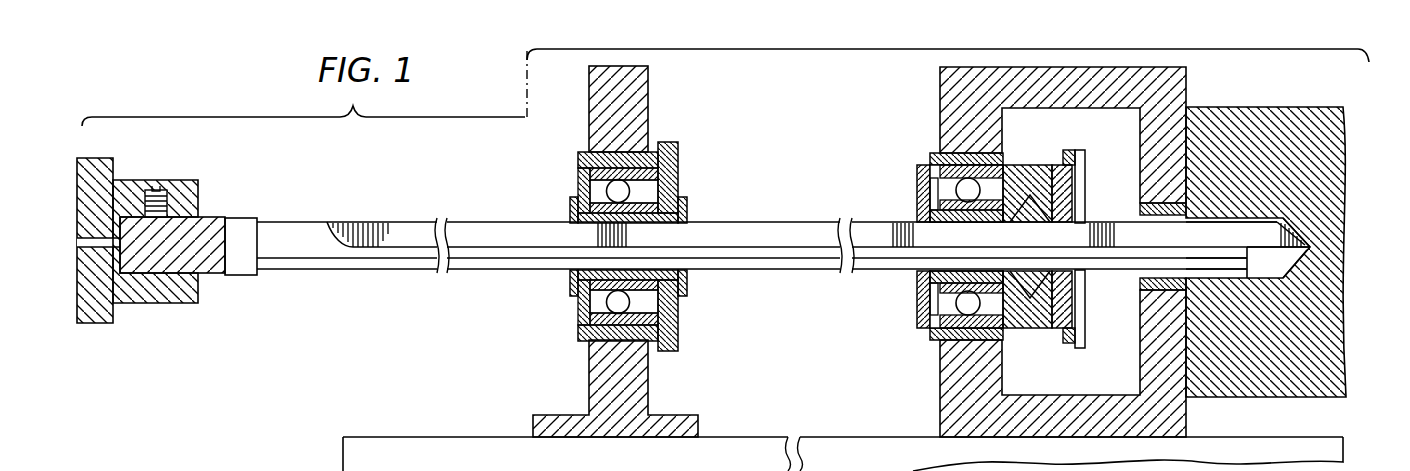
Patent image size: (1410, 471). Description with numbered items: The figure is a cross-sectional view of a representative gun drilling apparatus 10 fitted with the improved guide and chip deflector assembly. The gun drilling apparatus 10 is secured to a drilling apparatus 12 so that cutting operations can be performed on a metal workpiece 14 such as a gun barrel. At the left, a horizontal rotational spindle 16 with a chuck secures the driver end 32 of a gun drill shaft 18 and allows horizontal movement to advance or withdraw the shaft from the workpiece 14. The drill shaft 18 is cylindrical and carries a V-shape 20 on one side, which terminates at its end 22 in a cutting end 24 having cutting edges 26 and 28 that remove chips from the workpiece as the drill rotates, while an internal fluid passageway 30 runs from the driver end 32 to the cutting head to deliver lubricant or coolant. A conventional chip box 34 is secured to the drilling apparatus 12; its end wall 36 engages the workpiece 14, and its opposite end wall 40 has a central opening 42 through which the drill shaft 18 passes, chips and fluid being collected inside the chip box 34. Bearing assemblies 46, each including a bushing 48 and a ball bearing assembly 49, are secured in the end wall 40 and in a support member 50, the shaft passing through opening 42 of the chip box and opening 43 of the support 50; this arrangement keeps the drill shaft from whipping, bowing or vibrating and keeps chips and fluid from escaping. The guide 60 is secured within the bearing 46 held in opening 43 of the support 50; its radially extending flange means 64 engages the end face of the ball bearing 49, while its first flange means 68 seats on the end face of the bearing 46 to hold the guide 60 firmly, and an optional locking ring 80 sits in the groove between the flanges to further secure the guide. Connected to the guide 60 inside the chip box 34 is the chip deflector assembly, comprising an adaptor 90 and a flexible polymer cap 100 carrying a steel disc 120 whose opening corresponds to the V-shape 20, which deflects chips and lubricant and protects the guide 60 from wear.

The gun drilling apparatus 10 is at (337, 167).
The drilling apparatus 12 is at (397, 452).
The metal workpiece 14 is at (1258, 125).
The horizontal rotational spindle 16 is at (92, 311).
The gun drill shaft 18 is at (294, 251).
The V-shape 20 is at (418, 228).
The end 22 is at (1213, 237).
The cutting end 24 is at (1273, 205).
The cutting edge 26 is at (1298, 232).
The cutting edge 28 is at (1302, 259).
The internal fluid passageway 30 is at (103, 243).
The driver end 32 is at (238, 228).
The chip box 34 is at (899, 107).
The end wall 36 is at (1163, 418).
The opposite end wall 40 is at (945, 381).
The central opening 42 is at (934, 336).
The opening 43 is at (583, 346).
The bearing assembly 46 is at (574, 176).
The bushing 48 is at (577, 335).
The ball bearing assembly 49 is at (641, 324).
The support member 50 is at (632, 393).
The guide 60 is at (681, 212).
The radially extending flange means 64 is at (572, 211).
The first flange means 68 is at (1015, 470).
The locking ring 80 is at (669, 158).
The adaptor 90 is at (1021, 165).
The cap 100 is at (1060, 172).
The steel disc 120 is at (1086, 172).